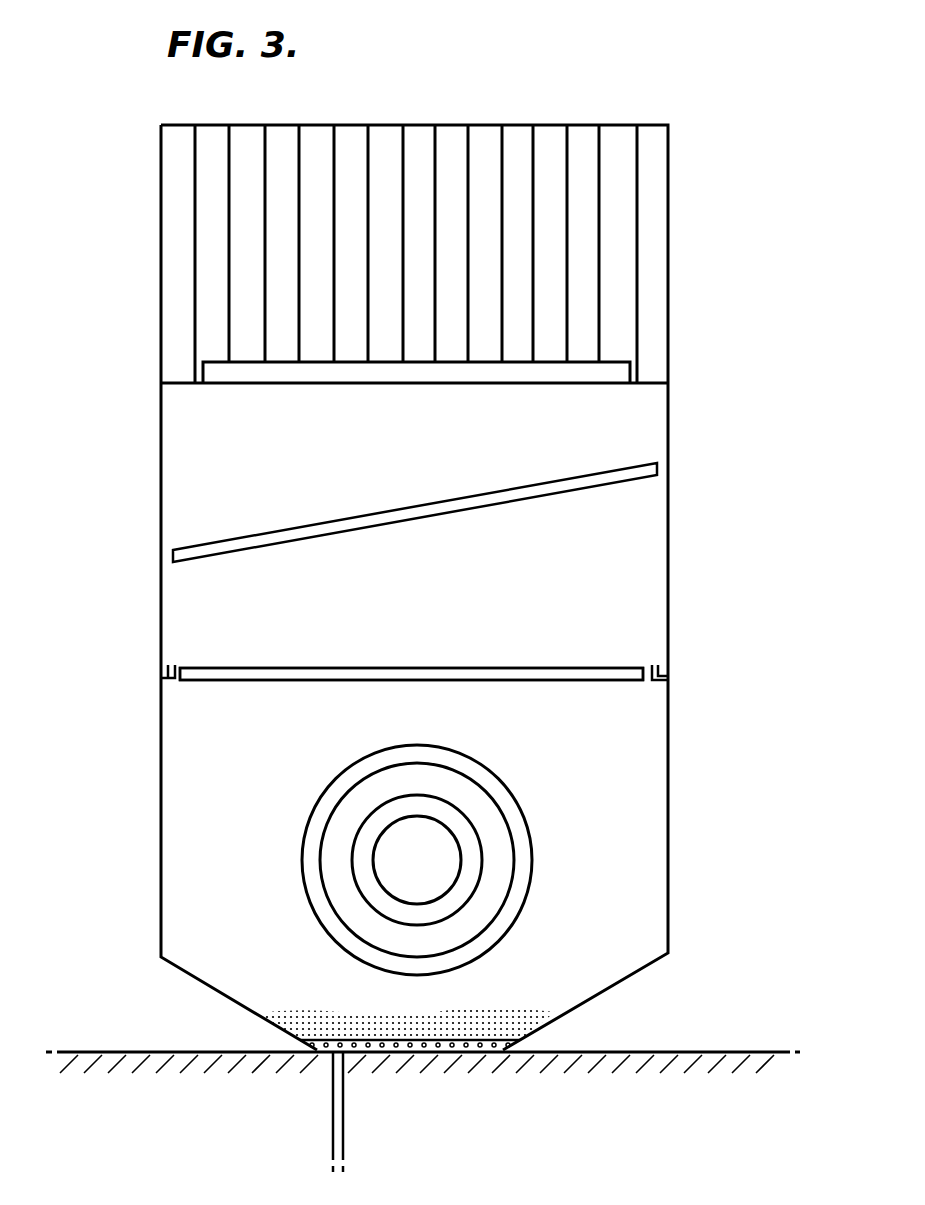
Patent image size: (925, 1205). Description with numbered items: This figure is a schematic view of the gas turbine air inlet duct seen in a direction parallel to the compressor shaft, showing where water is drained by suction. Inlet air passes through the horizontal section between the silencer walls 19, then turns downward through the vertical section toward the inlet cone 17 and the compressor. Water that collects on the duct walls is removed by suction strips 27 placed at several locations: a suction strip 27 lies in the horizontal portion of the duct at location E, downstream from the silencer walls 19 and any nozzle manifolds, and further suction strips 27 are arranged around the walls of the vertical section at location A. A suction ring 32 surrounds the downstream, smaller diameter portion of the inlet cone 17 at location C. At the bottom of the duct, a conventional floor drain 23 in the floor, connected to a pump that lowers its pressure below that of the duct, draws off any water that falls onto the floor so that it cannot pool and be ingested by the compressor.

The silencer walls 19 is at (567, 231).
The location E is at (610, 370).
The suction strip 27 is at (247, 385).
The location A is at (602, 667).
The inlet cone 17 is at (462, 798).
The suction ring 32 is at (358, 830).
The location C is at (483, 860).
The floor drain 23 is at (343, 1130).